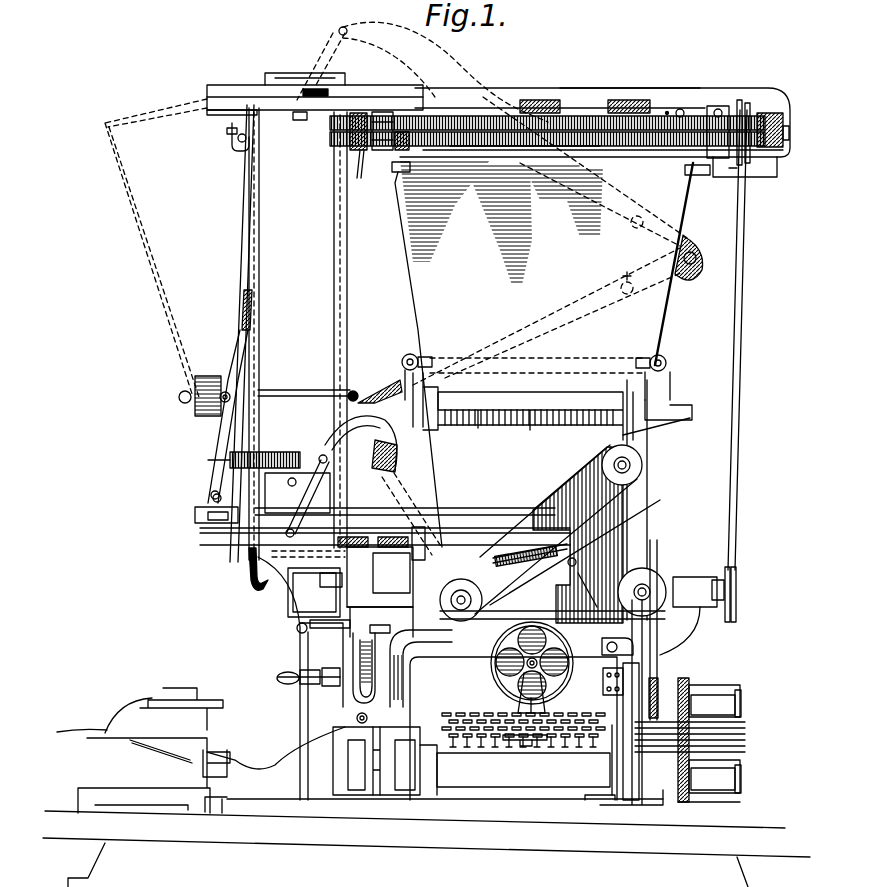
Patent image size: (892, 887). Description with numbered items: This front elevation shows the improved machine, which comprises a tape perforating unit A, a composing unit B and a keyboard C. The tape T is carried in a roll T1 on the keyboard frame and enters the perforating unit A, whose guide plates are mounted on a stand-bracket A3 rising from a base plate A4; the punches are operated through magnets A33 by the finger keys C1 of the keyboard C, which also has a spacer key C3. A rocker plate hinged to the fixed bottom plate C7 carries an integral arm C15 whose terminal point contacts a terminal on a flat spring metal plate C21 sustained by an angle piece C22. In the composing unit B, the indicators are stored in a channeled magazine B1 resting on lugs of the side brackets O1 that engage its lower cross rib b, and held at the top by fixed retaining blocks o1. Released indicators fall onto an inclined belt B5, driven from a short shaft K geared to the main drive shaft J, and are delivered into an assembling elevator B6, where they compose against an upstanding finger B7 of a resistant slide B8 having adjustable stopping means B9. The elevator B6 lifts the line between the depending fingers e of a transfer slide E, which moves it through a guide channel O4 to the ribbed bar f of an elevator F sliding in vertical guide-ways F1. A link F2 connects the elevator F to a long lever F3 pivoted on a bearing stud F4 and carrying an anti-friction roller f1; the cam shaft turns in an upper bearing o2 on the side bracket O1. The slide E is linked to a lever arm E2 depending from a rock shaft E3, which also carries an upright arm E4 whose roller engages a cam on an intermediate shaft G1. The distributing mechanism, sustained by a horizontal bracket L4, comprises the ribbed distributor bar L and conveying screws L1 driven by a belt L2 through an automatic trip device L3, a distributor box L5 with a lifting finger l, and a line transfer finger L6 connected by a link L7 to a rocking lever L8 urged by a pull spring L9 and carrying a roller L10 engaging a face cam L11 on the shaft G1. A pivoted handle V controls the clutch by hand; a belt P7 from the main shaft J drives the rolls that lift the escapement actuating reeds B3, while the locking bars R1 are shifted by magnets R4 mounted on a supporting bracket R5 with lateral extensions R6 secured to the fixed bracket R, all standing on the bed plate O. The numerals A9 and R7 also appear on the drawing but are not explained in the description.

The distributor bar L is at (533, 104).
The conveying screws L1 is at (500, 148).
The belt L2 is at (745, 215).
The automatic trip device L3 is at (770, 118).
The horizontal bracket L4 is at (603, 97).
The distributor box L5 is at (345, 150).
The line transfer finger L6 is at (230, 141).
The link L7 is at (195, 113).
The rocking lever L8 is at (148, 260).
The pull spring L9 is at (254, 448).
The roller L10 is at (232, 393).
The face cam L11 is at (202, 380).
The elevator F is at (240, 562).
The vertical guide-ways F1 is at (262, 344).
The link F2 is at (262, 498).
The long lever F3 is at (470, 82).
The bearing stud F4 is at (712, 240).
The ribbed bar f is at (301, 122).
The anti-friction roller f1 is at (627, 280).
The lifting finger l is at (359, 178).
The fixed retaining blocks o1 is at (396, 173).
The upper bearing o2 is at (420, 356).
The bed plate O is at (668, 376).
The side brackets O1 is at (685, 410).
The guide channel O4 is at (285, 580).
The composing unit B is at (412, 359).
The channeled magazine B1 is at (501, 228).
The escapement actuating reeds B3 is at (622, 527).
The inclined belt B5 is at (632, 482).
The assembling elevator B6 is at (352, 658).
The upstanding finger B7 is at (380, 613).
The resistant slide B8 is at (483, 632).
The adjustable stopping means B9 is at (552, 612).
The lower cross rib b is at (610, 363).
The transfer slide E is at (468, 506).
The lever arm E2 is at (398, 470).
The rock shaft E3 is at (362, 450).
The upright arm E4 is at (365, 384).
The depending fingers e is at (414, 560).
The intermediate shaft G1 is at (304, 383).
The fore-and-aft shaft K is at (648, 586).
The main drive shaft J is at (740, 598).
The belt P7 is at (685, 674).
The fixed bracket R is at (656, 775).
The main notched locking bars R1 is at (742, 734).
The magnets R4 is at (720, 700).
The supporting bracket R5 is at (692, 690).
The lateral extensions R6 is at (704, 806).
The end plate R7 is at (742, 712).
The tape T is at (297, 742).
The roll T1 is at (492, 668).
The pivoted handle V is at (288, 672).
The tape perforating unit A is at (366, 761).
The stand-bracket A3 is at (445, 762).
The base plate A4 is at (425, 798).
The pivot A9 is at (357, 722).
The punch magnets A33 is at (347, 780).
The keyboard C is at (513, 728).
The finger keys C1 is at (568, 748).
The spacer key C3 is at (507, 752).
The fixed bottom plate C7 is at (600, 798).
The integral arm C15 is at (612, 752).
The flat spring metal plate C21 is at (603, 690).
The angle piece C22 is at (603, 678).